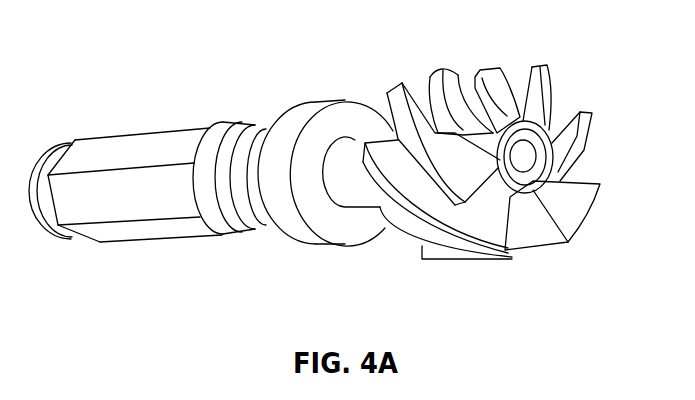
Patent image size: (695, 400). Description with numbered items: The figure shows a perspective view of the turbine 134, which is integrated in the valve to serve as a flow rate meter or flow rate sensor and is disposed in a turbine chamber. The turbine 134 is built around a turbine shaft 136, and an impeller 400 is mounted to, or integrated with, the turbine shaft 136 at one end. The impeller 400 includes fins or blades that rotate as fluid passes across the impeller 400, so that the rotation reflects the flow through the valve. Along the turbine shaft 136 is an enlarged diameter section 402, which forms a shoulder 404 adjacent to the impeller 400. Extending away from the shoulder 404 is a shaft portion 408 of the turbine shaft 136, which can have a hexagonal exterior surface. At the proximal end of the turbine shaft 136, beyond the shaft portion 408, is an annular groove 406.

The turbine 134 is at (105, 77).
The turbine shaft 136 is at (357, 131).
The impeller 400 is at (578, 134).
The enlarged diameter section 402 is at (298, 130).
The shoulder 404 is at (282, 110).
The annular groove 406 is at (70, 241).
The shaft portion 408 is at (166, 133).